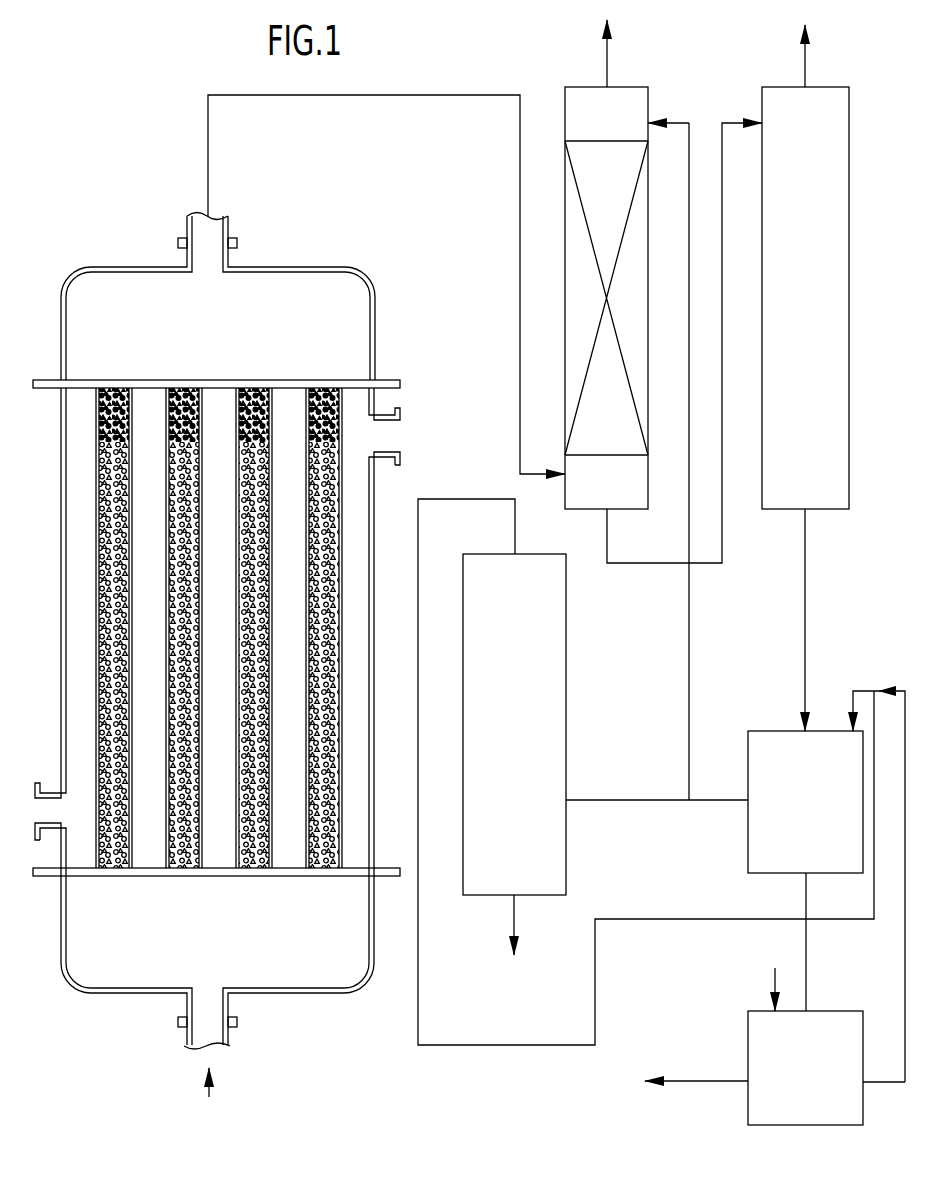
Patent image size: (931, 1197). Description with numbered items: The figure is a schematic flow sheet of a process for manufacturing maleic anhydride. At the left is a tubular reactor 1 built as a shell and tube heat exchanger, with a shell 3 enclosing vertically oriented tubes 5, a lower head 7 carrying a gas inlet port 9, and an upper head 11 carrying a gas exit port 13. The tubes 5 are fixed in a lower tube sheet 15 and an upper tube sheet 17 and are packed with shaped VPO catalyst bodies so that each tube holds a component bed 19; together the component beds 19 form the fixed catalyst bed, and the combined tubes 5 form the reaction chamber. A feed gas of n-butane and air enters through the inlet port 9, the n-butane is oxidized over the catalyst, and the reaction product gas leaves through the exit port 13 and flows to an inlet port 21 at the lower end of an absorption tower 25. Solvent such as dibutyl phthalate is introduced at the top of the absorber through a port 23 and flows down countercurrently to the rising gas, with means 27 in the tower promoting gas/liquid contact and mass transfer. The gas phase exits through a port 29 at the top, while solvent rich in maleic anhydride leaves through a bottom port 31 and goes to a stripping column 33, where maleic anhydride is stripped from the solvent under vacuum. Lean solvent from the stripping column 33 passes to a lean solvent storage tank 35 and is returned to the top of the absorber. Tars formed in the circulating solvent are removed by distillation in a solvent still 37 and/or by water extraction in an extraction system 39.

The tubular reactor 1 is at (56, 462).
The shell 3 is at (60, 638).
The tubes 5 is at (230, 683).
The lower head 7 is at (78, 992).
The gas inlet port 9 is at (233, 1023).
The upper head 11 is at (97, 265).
The gas exit port 13 is at (234, 240).
The lower tube sheet 15 is at (275, 878).
The upper tube sheet 17 is at (285, 380).
The component bed 19 is at (248, 572).
The inlet port 21 is at (563, 472).
The port 23 is at (650, 121).
The absorption tower 25 is at (565, 157).
The means for promoting gas/liquid contact 27 is at (590, 245).
The port 29 is at (607, 68).
The bottom port 31 is at (607, 512).
The stripping column 33 is at (850, 205).
The lean solvent storage tank 35 is at (787, 730).
The solvent still 37 is at (567, 700).
The extraction system 39 is at (748, 1114).